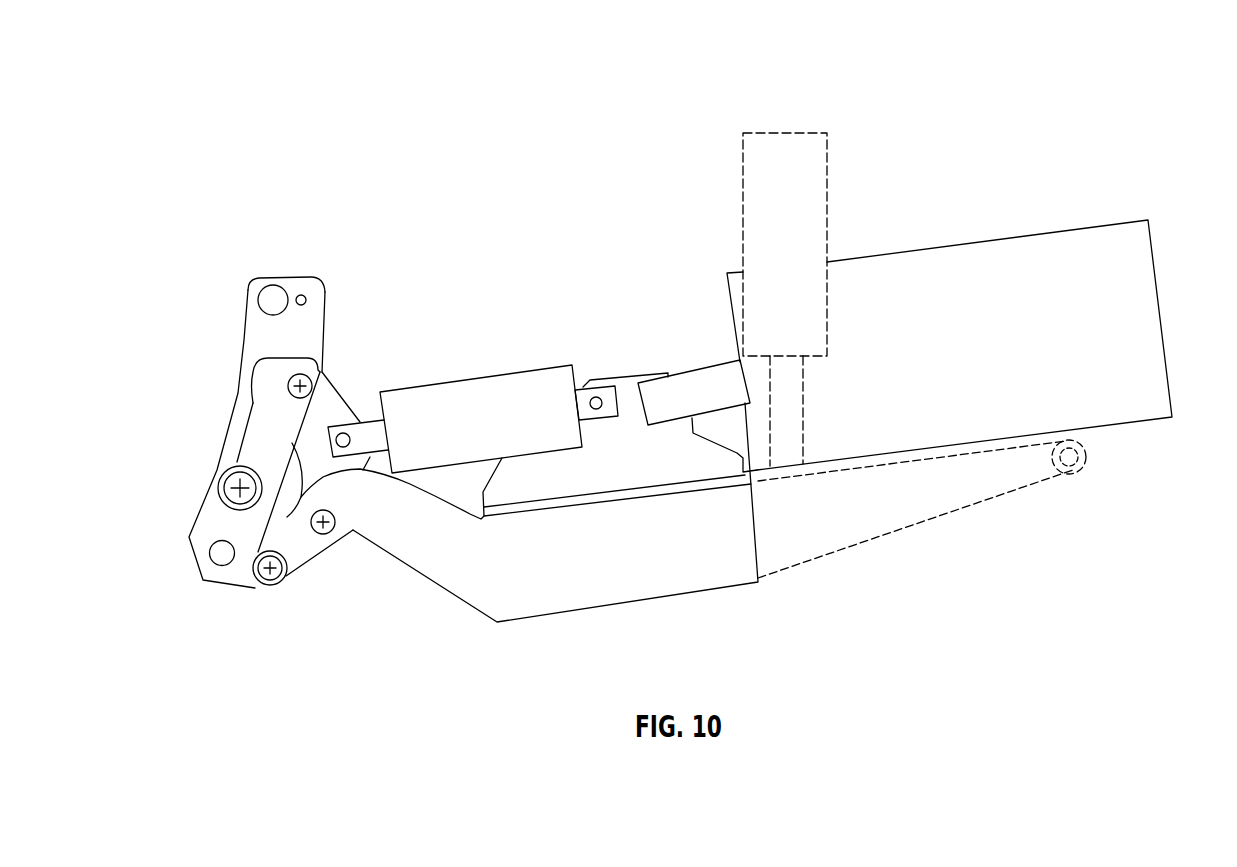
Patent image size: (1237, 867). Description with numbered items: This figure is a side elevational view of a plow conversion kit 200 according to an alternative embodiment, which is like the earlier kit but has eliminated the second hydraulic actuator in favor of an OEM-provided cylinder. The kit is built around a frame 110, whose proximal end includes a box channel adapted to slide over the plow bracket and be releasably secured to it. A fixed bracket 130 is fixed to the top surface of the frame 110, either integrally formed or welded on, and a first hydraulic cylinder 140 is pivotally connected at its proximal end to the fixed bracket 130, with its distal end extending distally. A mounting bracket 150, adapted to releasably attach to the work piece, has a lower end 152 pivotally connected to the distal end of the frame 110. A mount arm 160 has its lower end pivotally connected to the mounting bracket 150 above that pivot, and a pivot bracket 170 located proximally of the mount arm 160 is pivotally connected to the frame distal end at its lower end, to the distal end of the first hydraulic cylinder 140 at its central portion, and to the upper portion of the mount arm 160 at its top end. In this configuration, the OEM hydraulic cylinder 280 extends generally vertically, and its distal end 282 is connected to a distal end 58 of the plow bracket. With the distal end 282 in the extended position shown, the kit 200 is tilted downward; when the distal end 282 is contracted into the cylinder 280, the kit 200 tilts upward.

The plow conversion kit 200 is at (1001, 81).
The mounting bracket 150 is at (246, 331).
The mount arm 160 is at (247, 436).
The pivot bracket 170 is at (339, 393).
The first hydraulic cylinder 140 is at (477, 375).
The fixed bracket 130 is at (682, 462).
The frame 110 is at (628, 604).
The OEM hydraulic cylinder 280 is at (828, 194).
The distal end 282 is at (783, 473).
The lower end 152 is at (947, 491).
The distal end 58 is at (795, 560).